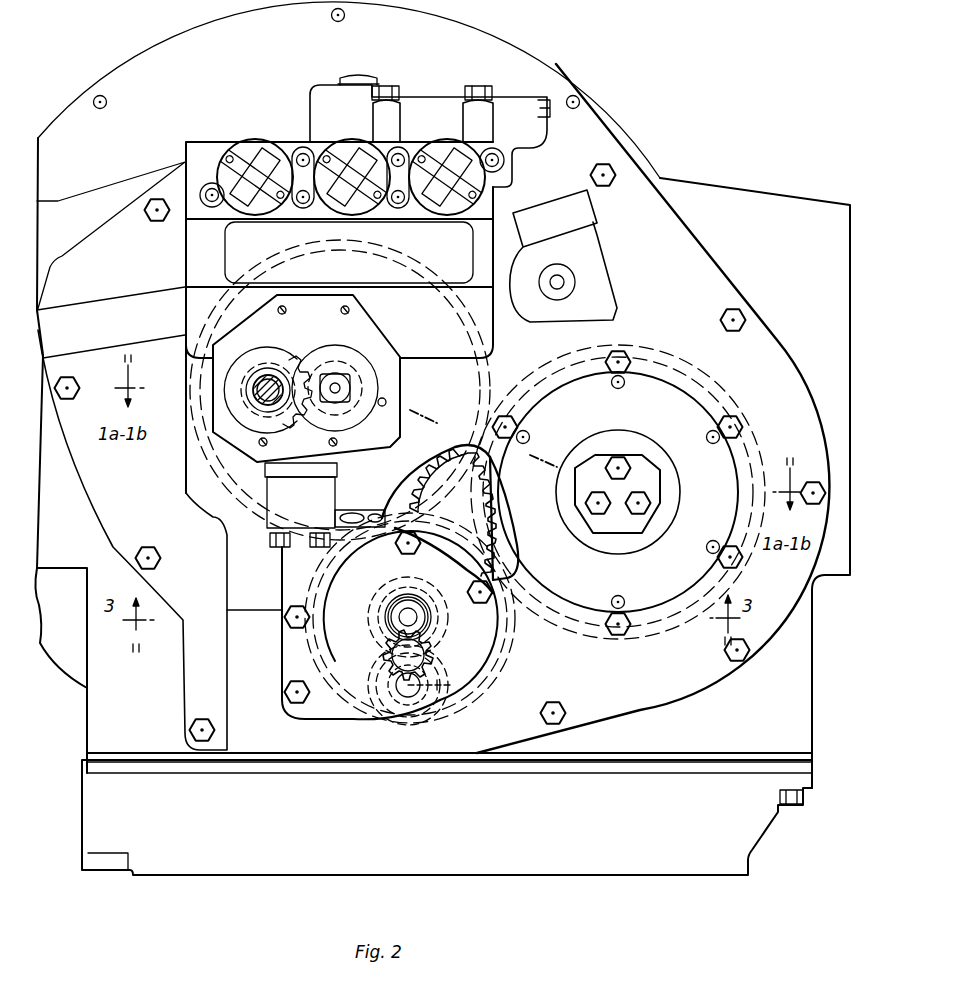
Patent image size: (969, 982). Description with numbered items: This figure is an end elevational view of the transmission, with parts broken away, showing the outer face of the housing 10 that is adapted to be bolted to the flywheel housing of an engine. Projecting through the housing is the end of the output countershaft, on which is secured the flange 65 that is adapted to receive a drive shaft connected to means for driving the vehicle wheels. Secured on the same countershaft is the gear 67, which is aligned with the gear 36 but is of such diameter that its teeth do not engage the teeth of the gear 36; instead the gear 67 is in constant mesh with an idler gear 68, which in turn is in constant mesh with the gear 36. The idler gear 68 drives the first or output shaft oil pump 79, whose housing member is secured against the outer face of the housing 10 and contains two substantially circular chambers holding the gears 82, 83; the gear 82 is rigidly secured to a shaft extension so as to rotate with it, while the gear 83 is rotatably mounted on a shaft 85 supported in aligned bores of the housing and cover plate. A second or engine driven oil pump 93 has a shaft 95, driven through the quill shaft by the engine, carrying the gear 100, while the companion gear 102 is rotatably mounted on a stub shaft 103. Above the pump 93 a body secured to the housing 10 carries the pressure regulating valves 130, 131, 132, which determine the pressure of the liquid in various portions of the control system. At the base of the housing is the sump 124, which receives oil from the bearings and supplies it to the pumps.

The housing 10 is at (588, 130).
The gear 36 is at (420, 480).
The flange 65 is at (655, 397).
The gear 67 is at (513, 527).
The idler gear 68 is at (438, 542).
The oil pump 79 is at (470, 648).
The gear 82 is at (390, 640).
The gear 83 is at (388, 659).
The shaft 85 is at (423, 686).
The second or engine driven oil pump 93 is at (400, 390).
The shaft 95 is at (345, 378).
The gear 100 is at (328, 372).
The gear 102 is at (300, 372).
The stub shaft 103 is at (268, 395).
The sump 124 is at (187, 853).
The pressure regulating valve 130 is at (485, 188).
The pressure regulating valve 131 is at (345, 153).
The pressure regulating valve 132 is at (255, 150).